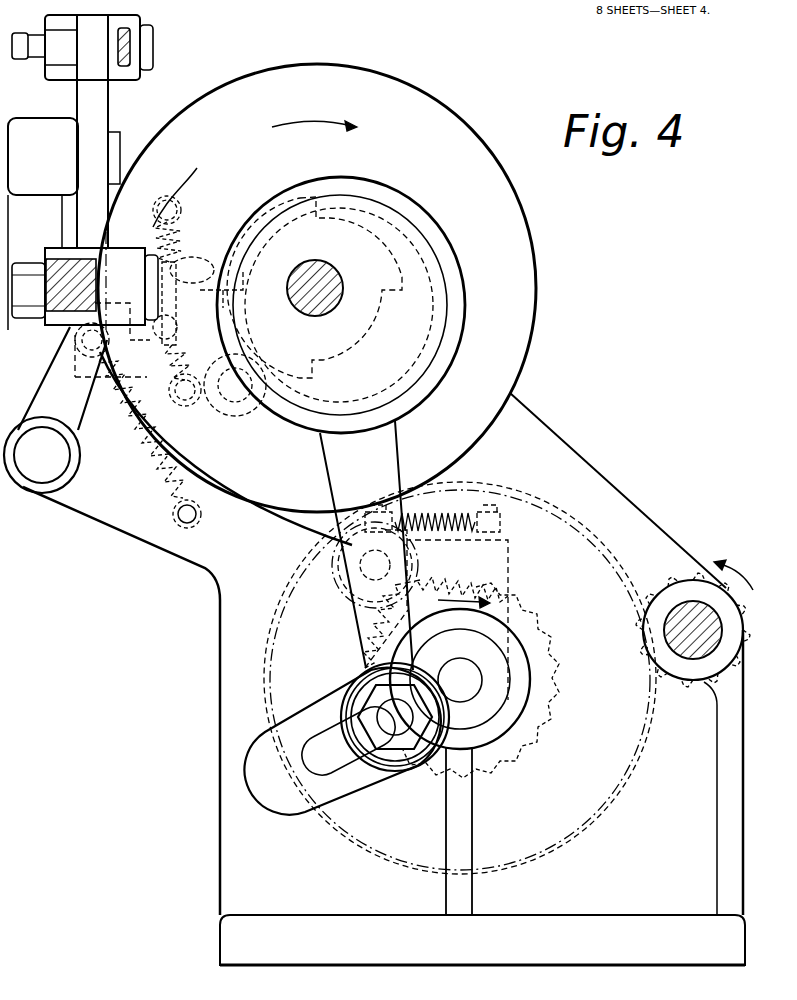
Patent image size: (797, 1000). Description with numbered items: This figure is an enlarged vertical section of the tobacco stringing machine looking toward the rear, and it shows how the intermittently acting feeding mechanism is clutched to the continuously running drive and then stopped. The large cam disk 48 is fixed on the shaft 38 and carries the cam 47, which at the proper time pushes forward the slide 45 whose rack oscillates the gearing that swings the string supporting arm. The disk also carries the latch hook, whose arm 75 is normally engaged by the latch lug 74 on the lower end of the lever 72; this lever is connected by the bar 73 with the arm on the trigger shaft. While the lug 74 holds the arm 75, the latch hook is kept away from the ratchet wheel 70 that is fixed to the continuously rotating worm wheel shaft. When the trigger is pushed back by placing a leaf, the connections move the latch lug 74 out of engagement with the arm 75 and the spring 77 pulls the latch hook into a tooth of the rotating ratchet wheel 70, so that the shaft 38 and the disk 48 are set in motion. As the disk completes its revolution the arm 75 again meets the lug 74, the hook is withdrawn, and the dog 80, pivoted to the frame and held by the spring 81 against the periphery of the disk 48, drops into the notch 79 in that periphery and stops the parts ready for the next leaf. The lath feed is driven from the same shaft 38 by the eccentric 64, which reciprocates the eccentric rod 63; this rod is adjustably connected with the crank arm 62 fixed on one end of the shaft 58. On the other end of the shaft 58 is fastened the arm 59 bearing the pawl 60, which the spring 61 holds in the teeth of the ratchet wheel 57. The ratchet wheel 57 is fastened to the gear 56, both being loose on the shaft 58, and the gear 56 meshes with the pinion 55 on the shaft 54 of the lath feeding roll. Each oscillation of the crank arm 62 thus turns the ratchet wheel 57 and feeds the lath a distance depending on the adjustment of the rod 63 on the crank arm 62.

The shaft 38 is at (343, 287).
The slide 45 is at (58, 248).
The cam 47 is at (145, 192).
The cam disk 48 is at (525, 215).
The shaft 54 is at (695, 660).
The pinion 55 is at (675, 580).
The gear 56 is at (632, 775).
The ratchet wheel 57 is at (535, 742).
The shaft 58 is at (485, 717).
The arm 59 is at (512, 562).
The pawl 60 is at (418, 576).
The spring 61 is at (462, 508).
The crank arm 62 is at (370, 792).
The eccentric rod 63 is at (402, 442).
The eccentric 64 is at (440, 370).
The ratchet wheel 70 is at (380, 322).
The lever 72 is at (96, 103).
The bar 73 is at (133, 22).
The latch lug 74 is at (143, 363).
The arm 75 is at (205, 405).
The spring 77 is at (185, 250).
The notch 79 is at (113, 322).
The dog 80 is at (62, 388).
The spring 81 is at (148, 455).